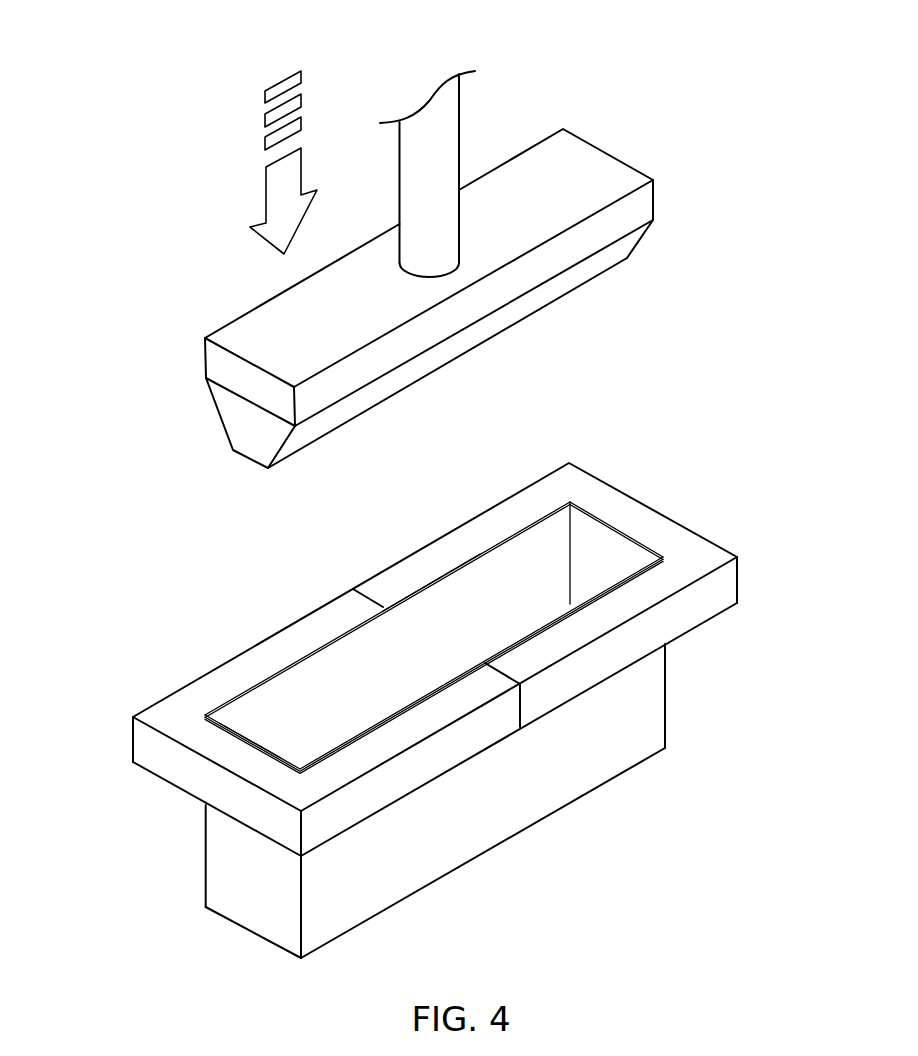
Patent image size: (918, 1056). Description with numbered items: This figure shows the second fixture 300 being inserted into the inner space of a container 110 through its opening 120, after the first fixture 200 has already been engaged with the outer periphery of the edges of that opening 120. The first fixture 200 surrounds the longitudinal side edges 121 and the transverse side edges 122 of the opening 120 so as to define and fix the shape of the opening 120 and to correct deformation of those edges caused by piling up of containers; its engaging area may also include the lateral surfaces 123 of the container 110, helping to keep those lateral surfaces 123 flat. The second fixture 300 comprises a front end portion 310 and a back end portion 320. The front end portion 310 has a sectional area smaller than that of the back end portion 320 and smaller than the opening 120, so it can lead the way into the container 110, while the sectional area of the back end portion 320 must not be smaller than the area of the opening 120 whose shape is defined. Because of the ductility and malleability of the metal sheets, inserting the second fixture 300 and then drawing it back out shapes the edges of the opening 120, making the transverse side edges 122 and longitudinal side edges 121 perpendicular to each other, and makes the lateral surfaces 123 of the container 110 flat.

The second fixture 300 is at (526, 143).
The back end portion 320 is at (225, 366).
The front end portion 310 is at (233, 427).
The first fixture 200 is at (425, 763).
The container 110 is at (259, 893).
The opening 120 is at (312, 695).
The longitudinal side edges 121 is at (432, 583).
The transverse side edges 122 is at (250, 742).
The lateral surfaces 123 is at (503, 819).